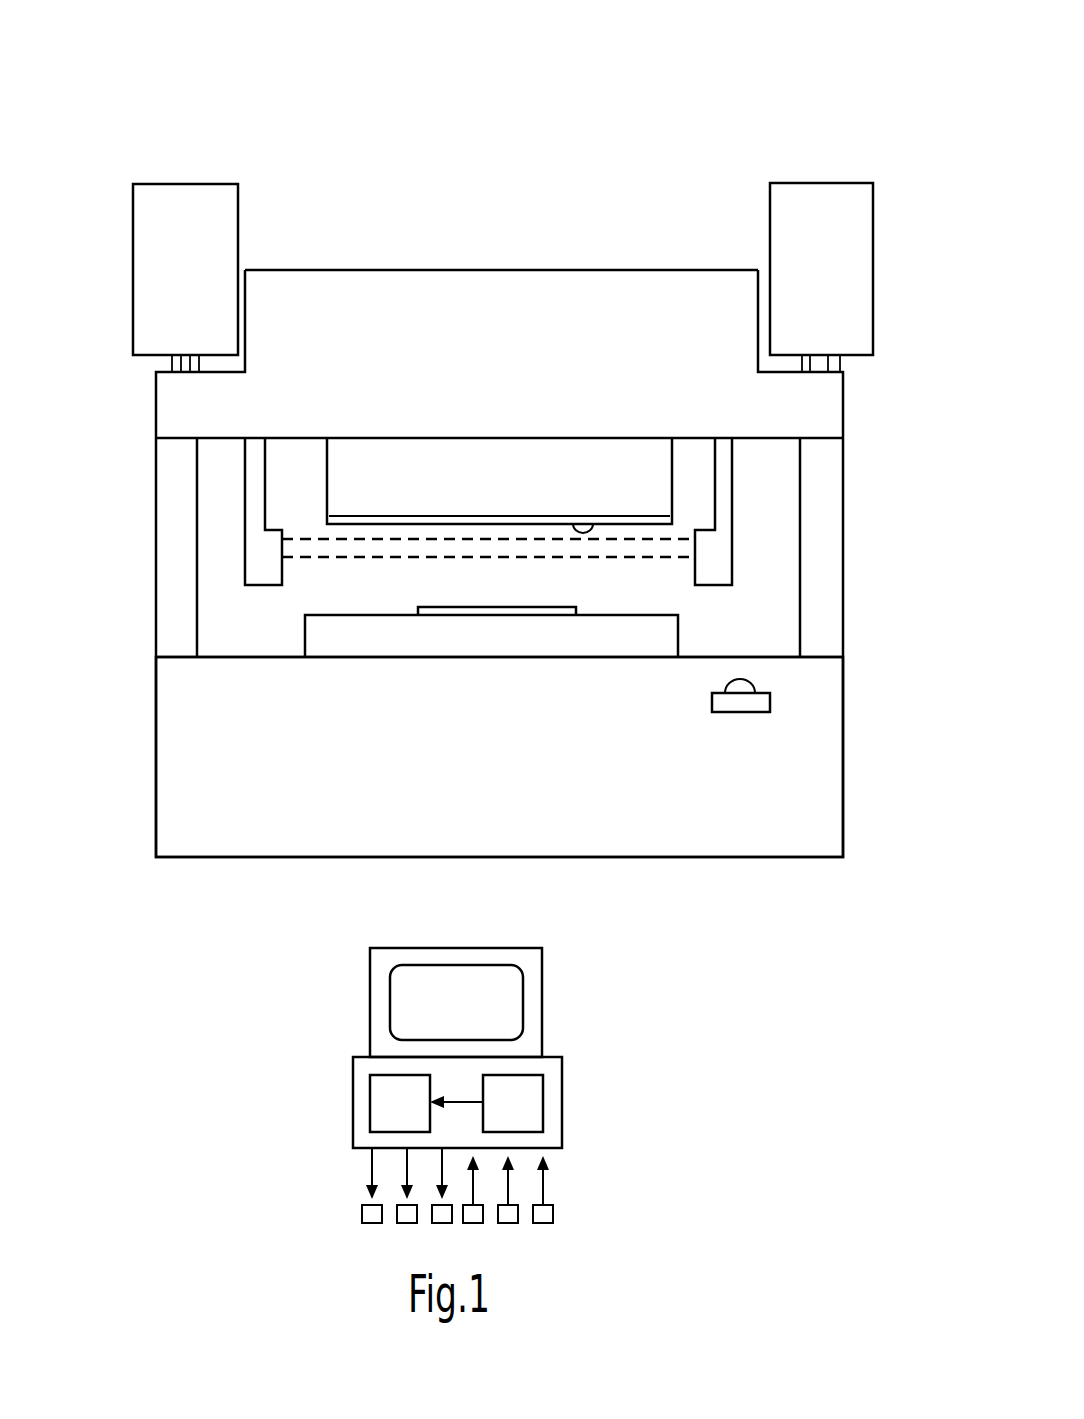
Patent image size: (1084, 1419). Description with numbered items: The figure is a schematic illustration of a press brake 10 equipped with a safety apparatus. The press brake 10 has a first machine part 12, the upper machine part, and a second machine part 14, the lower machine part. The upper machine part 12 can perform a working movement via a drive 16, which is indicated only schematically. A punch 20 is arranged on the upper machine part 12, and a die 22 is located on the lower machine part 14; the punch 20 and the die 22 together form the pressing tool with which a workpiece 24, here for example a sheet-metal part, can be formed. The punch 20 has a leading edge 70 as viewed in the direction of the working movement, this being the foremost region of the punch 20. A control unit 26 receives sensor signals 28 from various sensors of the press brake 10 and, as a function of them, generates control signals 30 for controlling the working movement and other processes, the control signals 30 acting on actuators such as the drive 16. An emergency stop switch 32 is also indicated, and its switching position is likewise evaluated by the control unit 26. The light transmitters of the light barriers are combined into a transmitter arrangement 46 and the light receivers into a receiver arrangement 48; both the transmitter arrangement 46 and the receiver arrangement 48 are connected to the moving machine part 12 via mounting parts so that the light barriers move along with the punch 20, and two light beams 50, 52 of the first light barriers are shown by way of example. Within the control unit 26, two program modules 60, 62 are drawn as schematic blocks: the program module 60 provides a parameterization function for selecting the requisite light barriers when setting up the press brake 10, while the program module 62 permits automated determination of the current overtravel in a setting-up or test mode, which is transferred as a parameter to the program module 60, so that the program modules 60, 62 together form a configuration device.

The press brake 10 is at (658, 128).
The first machine part 12 is at (321, 298).
The second machine part 14 is at (720, 822).
The drive 16 is at (180, 210).
The punch 20 is at (413, 462).
The die 22 is at (320, 630).
The workpiece 24 is at (418, 607).
The control unit 26 is at (353, 1082).
The sensor signals 28 is at (575, 1213).
The control signals 30 is at (348, 1232).
The emergency stop switch 32 is at (772, 705).
The transmitter arrangement 46 is at (252, 490).
The receiver arrangement 48 is at (723, 517).
The light beam 50 is at (652, 545).
The light beam 52 is at (602, 557).
The program module 60 is at (392, 1107).
The program module 62 is at (527, 1107).
The leading edge 70 is at (571, 527).